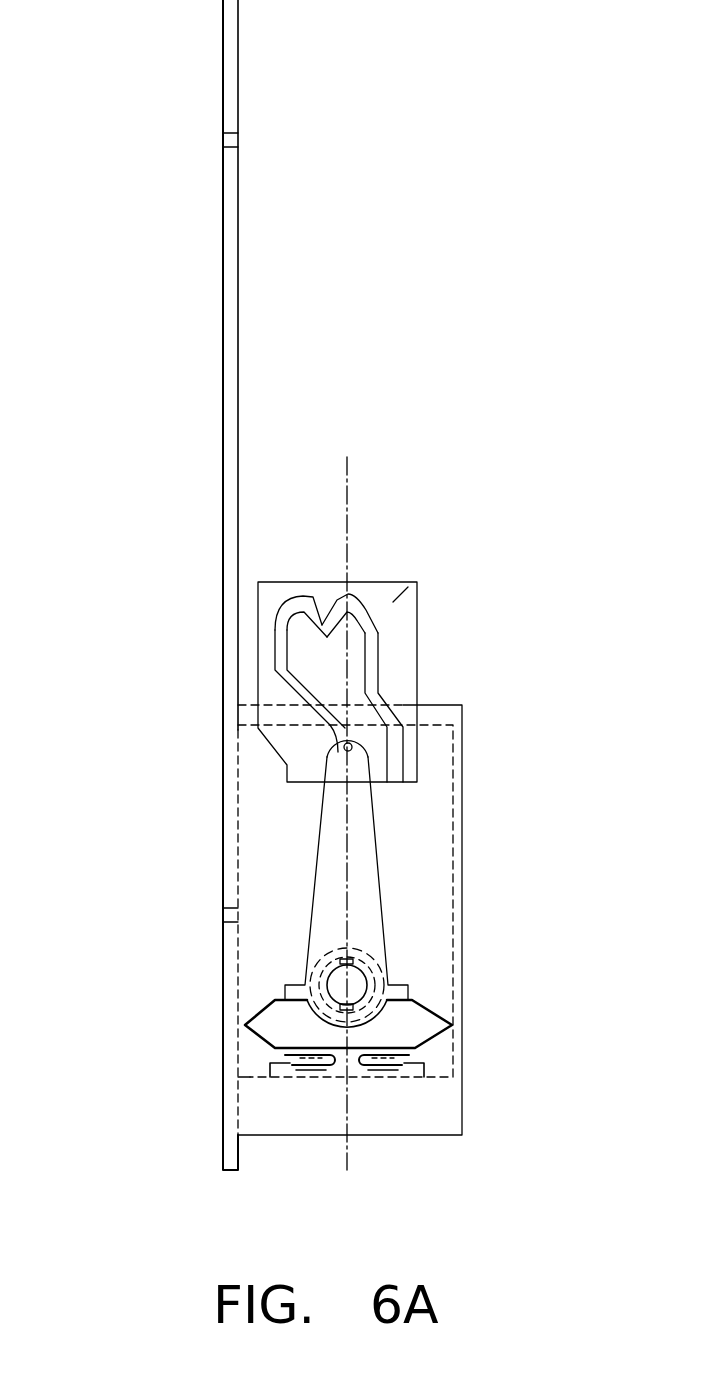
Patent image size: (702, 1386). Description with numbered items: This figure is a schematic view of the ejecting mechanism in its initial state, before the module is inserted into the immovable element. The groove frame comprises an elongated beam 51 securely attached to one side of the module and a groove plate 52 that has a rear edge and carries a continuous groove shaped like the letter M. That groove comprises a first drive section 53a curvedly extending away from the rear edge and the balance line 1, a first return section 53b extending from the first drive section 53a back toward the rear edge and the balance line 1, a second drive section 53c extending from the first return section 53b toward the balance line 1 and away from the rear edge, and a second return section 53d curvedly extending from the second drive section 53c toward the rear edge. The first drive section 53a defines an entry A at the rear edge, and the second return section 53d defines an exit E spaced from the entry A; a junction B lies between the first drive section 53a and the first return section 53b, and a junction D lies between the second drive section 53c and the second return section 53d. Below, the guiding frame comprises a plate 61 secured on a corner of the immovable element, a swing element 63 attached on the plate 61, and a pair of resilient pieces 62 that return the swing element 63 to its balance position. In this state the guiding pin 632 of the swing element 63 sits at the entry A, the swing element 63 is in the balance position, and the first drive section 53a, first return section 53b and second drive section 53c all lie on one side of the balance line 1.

The elongated beam 51 is at (236, 402).
The groove plate 52 is at (418, 582).
The first drive section 53a is at (288, 688).
The first return section 53b is at (300, 604).
The second drive section 53c is at (348, 596).
The second return section 53d is at (367, 667).
The plate 61 is at (447, 1116).
The resilient pieces 62 is at (440, 1027).
The swing element 63 is at (368, 898).
The guiding pin 632 is at (348, 747).
The entry A is at (357, 778).
The junction B is at (322, 626).
The junction D is at (358, 594).
The exit E is at (353, 737).
The balance line 1 is at (313, 597).